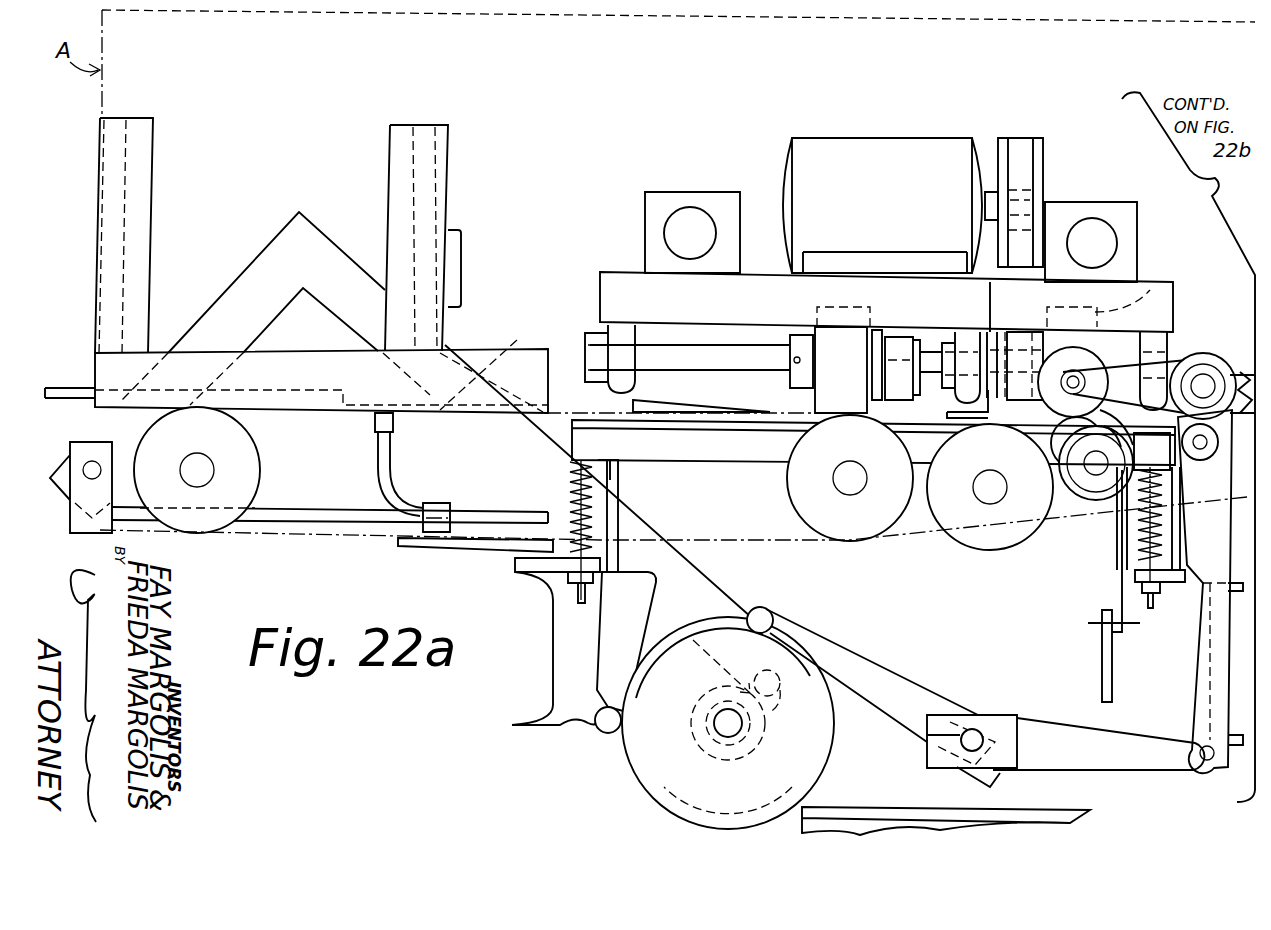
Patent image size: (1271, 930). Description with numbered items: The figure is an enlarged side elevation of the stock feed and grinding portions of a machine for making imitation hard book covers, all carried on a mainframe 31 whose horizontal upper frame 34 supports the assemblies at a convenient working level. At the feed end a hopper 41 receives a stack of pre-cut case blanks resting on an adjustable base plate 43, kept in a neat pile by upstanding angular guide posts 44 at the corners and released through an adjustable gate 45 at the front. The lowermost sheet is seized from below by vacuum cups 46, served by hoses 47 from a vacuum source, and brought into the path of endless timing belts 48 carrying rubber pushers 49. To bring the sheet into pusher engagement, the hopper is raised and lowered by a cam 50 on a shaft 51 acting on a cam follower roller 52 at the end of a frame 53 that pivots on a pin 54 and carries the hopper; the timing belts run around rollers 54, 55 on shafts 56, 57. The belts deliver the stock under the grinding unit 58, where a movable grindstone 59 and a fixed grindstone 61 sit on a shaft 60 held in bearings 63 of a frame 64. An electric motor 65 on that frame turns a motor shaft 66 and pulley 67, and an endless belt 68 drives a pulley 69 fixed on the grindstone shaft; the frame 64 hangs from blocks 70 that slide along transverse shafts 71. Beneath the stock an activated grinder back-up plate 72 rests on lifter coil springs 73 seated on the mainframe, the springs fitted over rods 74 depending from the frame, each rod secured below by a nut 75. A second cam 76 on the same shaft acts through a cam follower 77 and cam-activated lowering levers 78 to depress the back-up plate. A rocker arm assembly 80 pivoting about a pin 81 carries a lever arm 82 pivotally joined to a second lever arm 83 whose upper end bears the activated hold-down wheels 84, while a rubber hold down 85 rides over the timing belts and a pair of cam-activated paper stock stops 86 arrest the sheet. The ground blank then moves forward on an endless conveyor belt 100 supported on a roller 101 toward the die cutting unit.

The mainframe 31 is at (540, 678).
The upper frame 34 is at (890, 806).
The hopper 41 is at (372, 150).
The adjustable base plate 43 is at (68, 388).
The guide post 44 is at (152, 186).
The adjustable gate 45 is at (490, 362).
The vacuum cups 46 is at (393, 425).
The hoses 47 is at (392, 460).
The endless timing belts 48 is at (583, 413).
The rubber pushers 49 is at (470, 550).
The cam 50 is at (710, 762).
The shaft 51 is at (720, 723).
The cam follower roller 52 is at (749, 700).
The frame 53 is at (637, 517).
The pin 54 is at (90, 462).
The roller 55 is at (1000, 550).
The shaft 56 is at (197, 458).
The shaft 57 is at (992, 480).
The grinding unit 58 is at (727, 125).
The grindstone 59 is at (850, 368).
The shaft 60 is at (689, 358).
The grindstone 61 is at (1143, 293).
The bearings 63 is at (636, 339).
The frame 64 is at (716, 306).
The electric motor 65 is at (862, 146).
The motor shaft 66 is at (1025, 190).
The pulley 67 is at (1043, 150).
The endless belt 68 is at (1022, 138).
The pulley 69 is at (987, 336).
The blocks 70 is at (645, 212).
The transverse extending shafts 71 is at (690, 218).
The grinder back-up plate 72 is at (700, 451).
The back-up plate lifter coil springs 73 is at (572, 481).
The rods 74 is at (578, 596).
The nut 75 is at (562, 578).
The cam 76 is at (627, 762).
The cam follower 77 is at (600, 731).
The back-up plate lowering levers 78 is at (620, 557).
The rocker arm assembly 80 is at (893, 662).
The pin 81 is at (975, 729).
The lever arm 82 is at (1065, 718).
The second lever arm 83 is at (1190, 679).
The activated hold-down wheels 84 is at (1073, 347).
The rubber hold down 85 is at (947, 418).
The cam activated paper stock stops 86 is at (1153, 436).
The endless conveyor belt 100 is at (967, 542).
The roller 101 is at (793, 494).